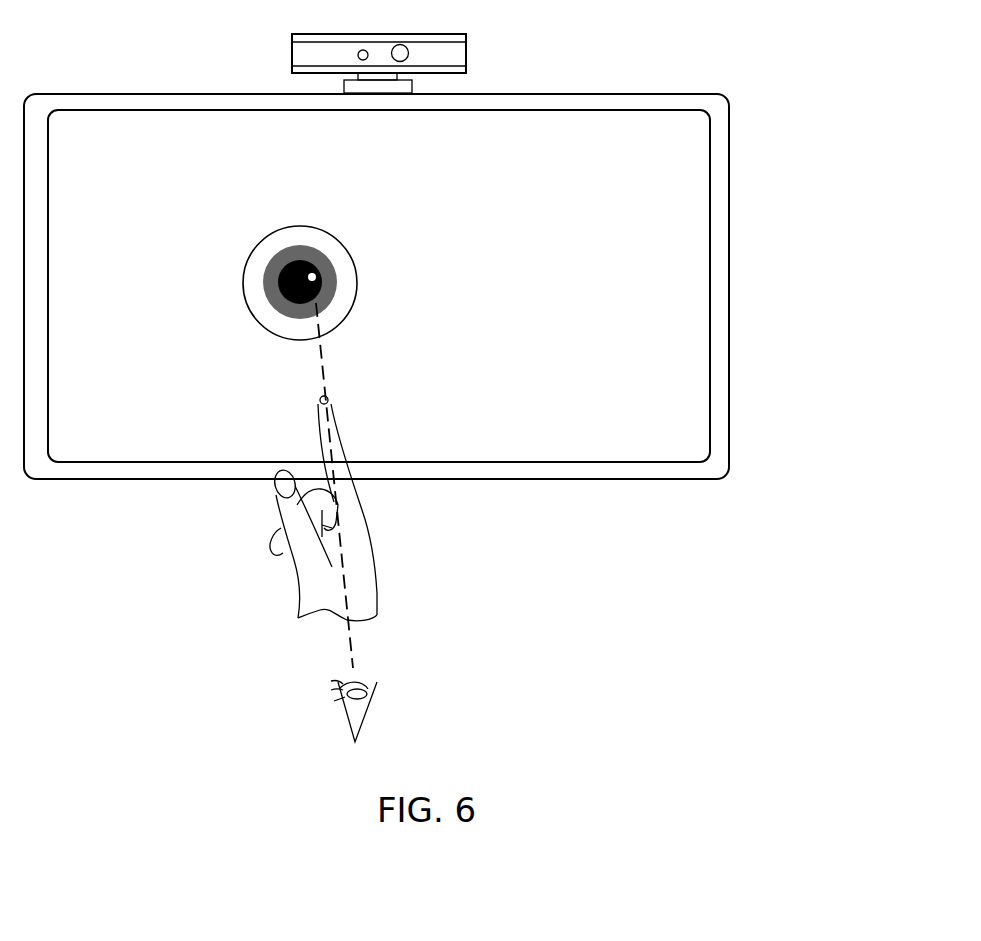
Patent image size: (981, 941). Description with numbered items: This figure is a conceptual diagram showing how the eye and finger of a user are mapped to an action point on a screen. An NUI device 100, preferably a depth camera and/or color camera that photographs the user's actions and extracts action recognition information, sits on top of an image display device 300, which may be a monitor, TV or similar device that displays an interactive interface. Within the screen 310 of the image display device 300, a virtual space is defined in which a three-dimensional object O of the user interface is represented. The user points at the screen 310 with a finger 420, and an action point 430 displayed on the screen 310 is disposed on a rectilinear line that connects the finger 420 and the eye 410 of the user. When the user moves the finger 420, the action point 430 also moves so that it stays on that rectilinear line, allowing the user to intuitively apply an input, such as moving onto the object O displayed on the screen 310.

The NUI device 100 is at (465, 34).
The image display device 300 is at (722, 94).
The screen 310 is at (685, 268).
The 3D object O is at (325, 230).
The action point 430 is at (315, 277).
The finger 420 is at (330, 398).
The eye 410 is at (355, 682).